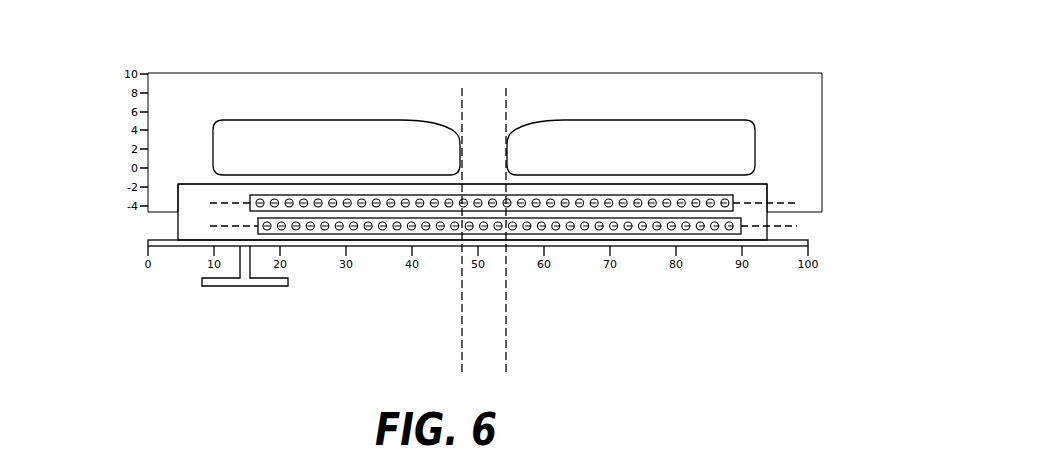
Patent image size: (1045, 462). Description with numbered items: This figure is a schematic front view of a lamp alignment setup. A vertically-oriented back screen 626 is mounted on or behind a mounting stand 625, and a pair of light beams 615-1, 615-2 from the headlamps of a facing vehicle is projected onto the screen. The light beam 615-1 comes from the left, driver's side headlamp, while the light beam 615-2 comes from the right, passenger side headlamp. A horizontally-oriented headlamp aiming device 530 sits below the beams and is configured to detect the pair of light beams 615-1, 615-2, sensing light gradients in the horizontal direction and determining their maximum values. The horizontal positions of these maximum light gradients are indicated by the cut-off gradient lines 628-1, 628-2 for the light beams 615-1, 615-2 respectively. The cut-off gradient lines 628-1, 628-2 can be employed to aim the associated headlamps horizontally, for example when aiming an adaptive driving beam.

The back screen 626 is at (162, 121).
The light beam 615-1 is at (317, 140).
The light beam 615-2 is at (623, 140).
The cut-off gradient line 628-1 is at (461, 110).
The cut-off gradient line 628-2 is at (508, 110).
The headlamp aiming device 530 is at (178, 228).
The mounting stand 625 is at (205, 283).